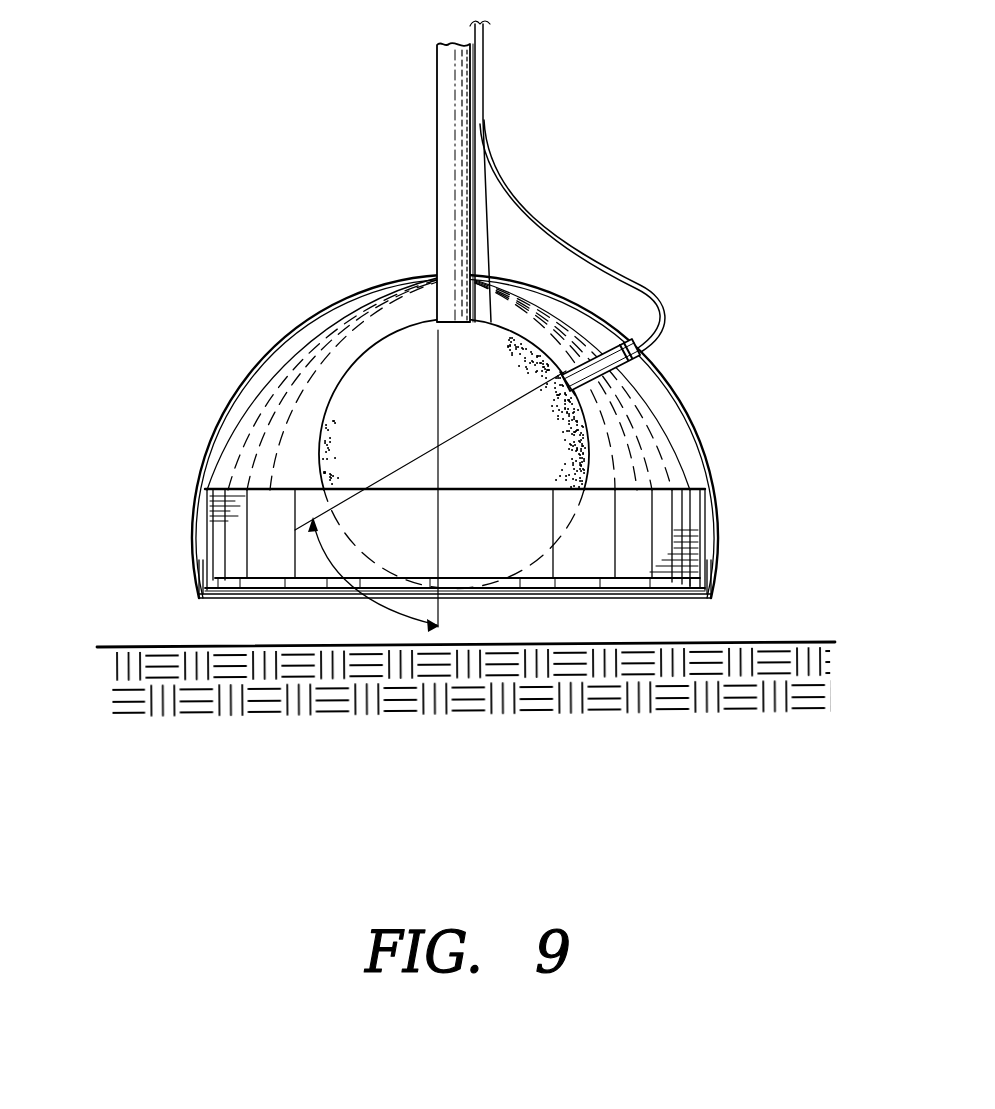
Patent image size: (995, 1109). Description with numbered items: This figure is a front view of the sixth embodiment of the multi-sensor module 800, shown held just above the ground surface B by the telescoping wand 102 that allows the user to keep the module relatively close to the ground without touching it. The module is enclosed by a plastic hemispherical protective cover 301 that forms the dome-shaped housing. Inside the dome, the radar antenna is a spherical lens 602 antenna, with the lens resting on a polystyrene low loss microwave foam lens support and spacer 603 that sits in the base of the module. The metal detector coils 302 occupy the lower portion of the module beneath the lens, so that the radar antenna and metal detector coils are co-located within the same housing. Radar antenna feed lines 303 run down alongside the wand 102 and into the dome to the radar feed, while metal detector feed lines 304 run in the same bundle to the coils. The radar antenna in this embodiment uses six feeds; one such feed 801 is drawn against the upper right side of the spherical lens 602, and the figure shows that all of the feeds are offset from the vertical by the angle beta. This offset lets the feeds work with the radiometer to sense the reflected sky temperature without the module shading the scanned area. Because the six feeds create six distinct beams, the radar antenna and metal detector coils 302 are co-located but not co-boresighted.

The multi-sensor module 800 is at (210, 217).
The telescoping wand 102 is at (456, 158).
The metal detector feed lines 304 is at (484, 192).
The radar antenna feed lines 303 is at (617, 265).
The plastic hemispherical protective cover 301 is at (245, 358).
The six feed 801 is at (612, 387).
The spherical lens 602 is at (575, 463).
The foam lens support and spacer 603 is at (680, 540).
The metal detector coils 302 is at (250, 588).
The surface B is at (790, 641).